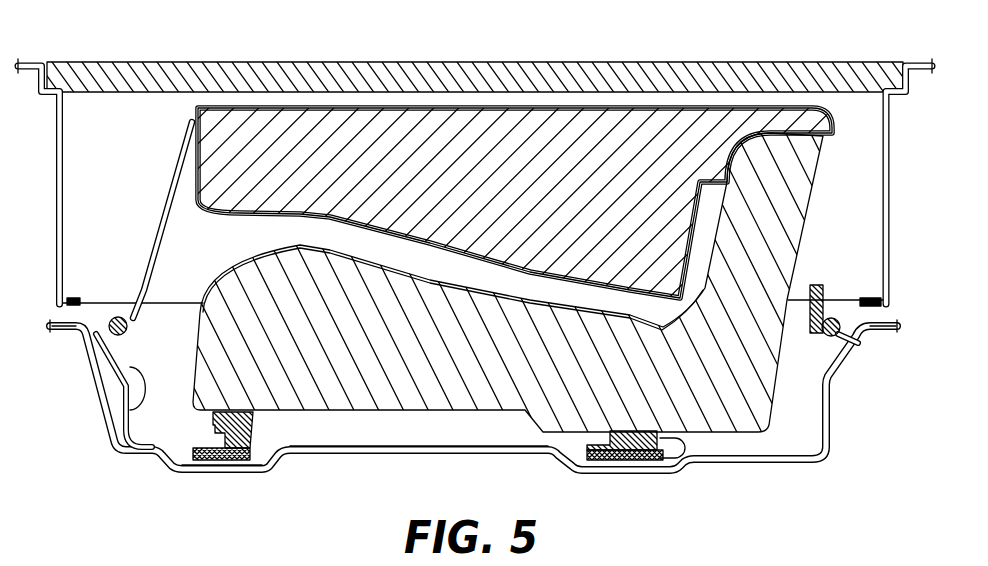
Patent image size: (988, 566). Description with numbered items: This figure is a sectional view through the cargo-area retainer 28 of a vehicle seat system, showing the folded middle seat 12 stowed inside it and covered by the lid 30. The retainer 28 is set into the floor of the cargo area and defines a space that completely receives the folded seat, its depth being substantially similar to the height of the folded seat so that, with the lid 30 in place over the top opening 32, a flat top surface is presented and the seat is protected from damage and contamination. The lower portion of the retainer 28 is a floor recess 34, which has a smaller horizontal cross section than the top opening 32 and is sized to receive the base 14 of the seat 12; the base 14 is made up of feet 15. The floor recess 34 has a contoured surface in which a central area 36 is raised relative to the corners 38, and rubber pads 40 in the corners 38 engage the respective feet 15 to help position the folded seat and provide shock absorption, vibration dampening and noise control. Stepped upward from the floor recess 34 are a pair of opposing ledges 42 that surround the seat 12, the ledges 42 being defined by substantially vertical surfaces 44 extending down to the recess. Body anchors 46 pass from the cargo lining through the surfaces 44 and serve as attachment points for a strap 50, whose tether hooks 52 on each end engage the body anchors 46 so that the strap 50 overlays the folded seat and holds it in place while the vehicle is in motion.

The middle seat 12 is at (658, 133).
The base 14 is at (738, 432).
The feet 15 is at (687, 452).
The retainer 28 is at (889, 180).
The lid 30 is at (490, 77).
The top opening 32 is at (140, 120).
The floor recess 34 is at (833, 425).
The central area 36 is at (352, 447).
The corners 38 is at (185, 462).
The rubber pads 40 is at (270, 463).
The ledges 42 is at (66, 297).
The vertical surfaces 44 is at (130, 413).
The body anchors 46 is at (88, 372).
The strap 50 is at (165, 207).
The tether hooks 52 is at (140, 318).